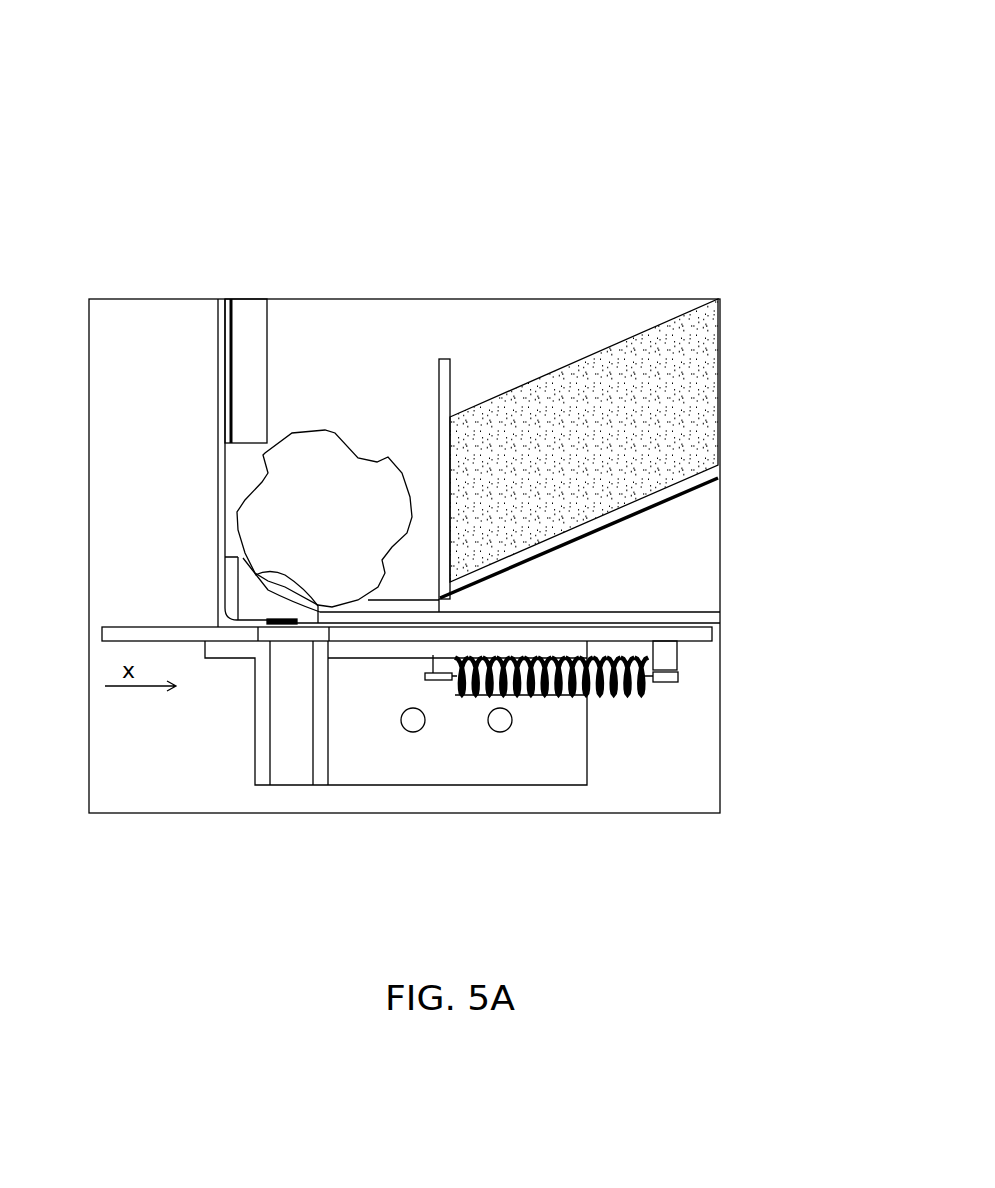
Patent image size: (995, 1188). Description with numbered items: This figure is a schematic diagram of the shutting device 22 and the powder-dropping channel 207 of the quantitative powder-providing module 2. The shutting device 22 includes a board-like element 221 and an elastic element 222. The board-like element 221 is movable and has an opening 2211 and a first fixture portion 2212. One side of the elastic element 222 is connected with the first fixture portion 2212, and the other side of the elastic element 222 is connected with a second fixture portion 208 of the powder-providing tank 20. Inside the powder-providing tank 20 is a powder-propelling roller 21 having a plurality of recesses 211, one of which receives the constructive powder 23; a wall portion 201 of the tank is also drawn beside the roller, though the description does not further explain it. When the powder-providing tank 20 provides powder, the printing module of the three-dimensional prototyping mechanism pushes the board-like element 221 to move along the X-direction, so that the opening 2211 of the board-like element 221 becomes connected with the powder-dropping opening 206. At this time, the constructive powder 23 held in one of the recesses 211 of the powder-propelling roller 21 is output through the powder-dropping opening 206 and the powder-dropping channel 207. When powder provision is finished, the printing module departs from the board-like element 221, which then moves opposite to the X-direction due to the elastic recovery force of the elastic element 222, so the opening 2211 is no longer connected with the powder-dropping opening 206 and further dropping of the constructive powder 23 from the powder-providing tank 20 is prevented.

The quantitative powder-providing module 2 is at (135, 51).
The powder-providing tank 20 is at (215, 378).
The powder-propelling roller 21 is at (333, 500).
The recess 211 is at (252, 472).
The partition wall 201 is at (448, 377).
The constructive powder 23 is at (685, 395).
The powder-dropping opening 206 is at (265, 612).
The shutting device 22 is at (477, 723).
The board-like element 221 is at (690, 633).
The first fixture portion 2212 is at (667, 648).
The opening 2211 is at (285, 632).
The elastic element 222 is at (650, 692).
The powder-dropping channel 207 is at (293, 738).
The second fixture portion 208 is at (447, 672).